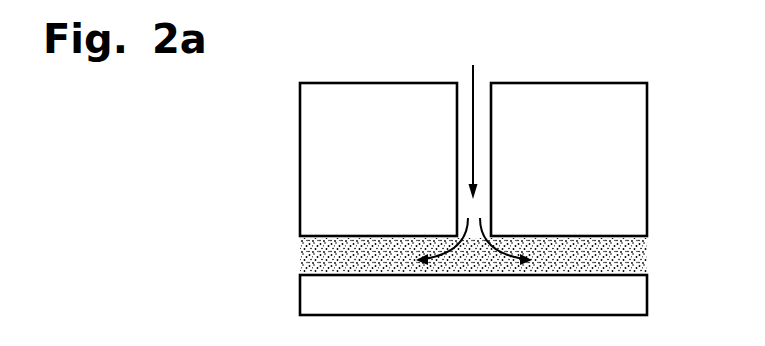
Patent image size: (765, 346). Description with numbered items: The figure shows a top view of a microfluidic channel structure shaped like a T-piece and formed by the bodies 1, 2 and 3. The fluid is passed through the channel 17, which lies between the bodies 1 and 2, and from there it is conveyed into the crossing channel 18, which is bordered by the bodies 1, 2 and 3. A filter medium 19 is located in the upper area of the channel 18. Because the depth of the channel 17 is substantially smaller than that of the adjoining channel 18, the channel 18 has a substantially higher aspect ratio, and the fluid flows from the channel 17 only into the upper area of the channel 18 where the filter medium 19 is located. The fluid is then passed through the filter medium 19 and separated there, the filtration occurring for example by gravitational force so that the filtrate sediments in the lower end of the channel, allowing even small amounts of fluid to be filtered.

The body 1 is at (377, 95).
The body 2 is at (569, 95).
The body 3 is at (638, 300).
The channel 17 is at (481, 88).
The crossing channel 18 is at (640, 257).
The filter medium 19 is at (473, 260).